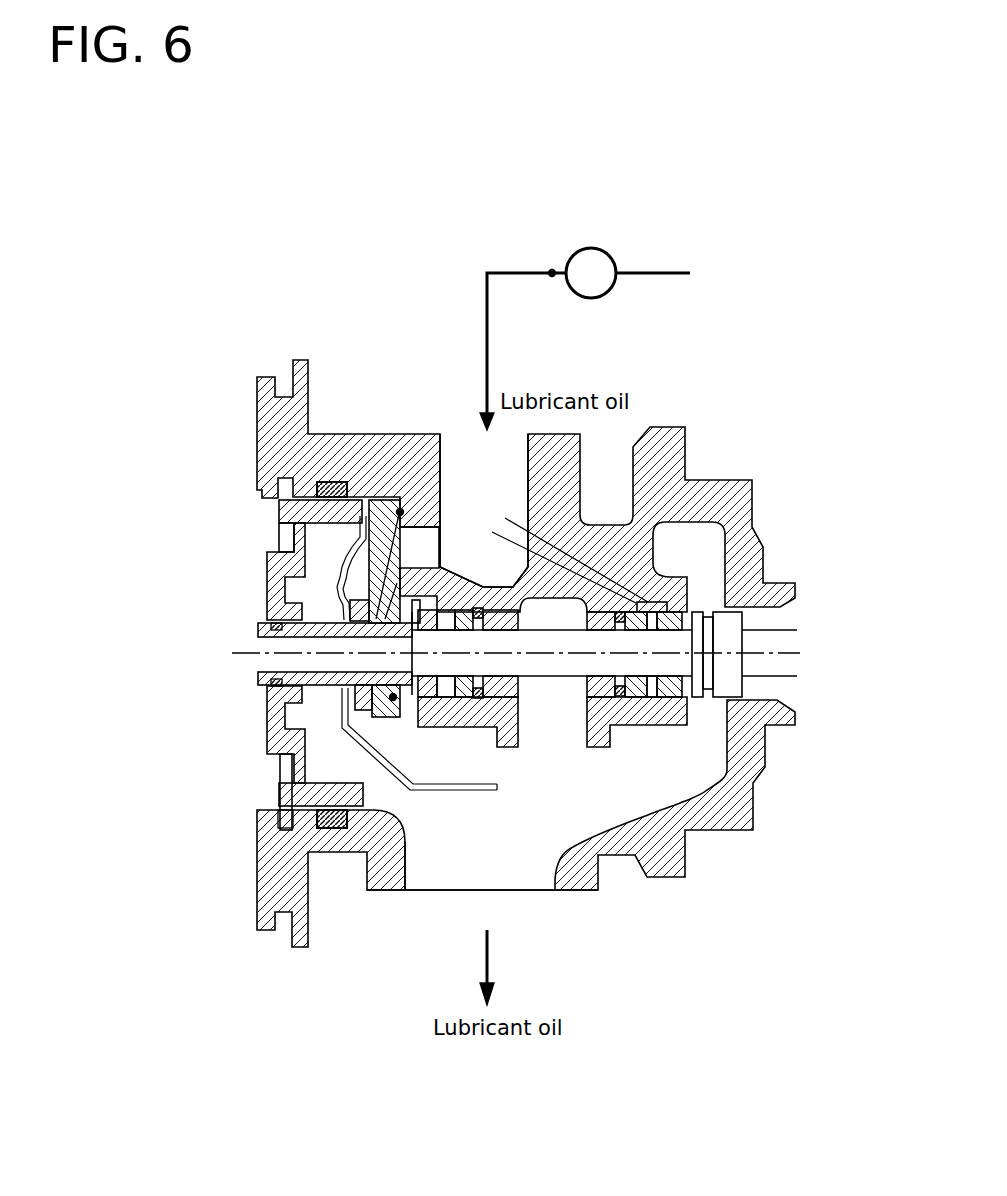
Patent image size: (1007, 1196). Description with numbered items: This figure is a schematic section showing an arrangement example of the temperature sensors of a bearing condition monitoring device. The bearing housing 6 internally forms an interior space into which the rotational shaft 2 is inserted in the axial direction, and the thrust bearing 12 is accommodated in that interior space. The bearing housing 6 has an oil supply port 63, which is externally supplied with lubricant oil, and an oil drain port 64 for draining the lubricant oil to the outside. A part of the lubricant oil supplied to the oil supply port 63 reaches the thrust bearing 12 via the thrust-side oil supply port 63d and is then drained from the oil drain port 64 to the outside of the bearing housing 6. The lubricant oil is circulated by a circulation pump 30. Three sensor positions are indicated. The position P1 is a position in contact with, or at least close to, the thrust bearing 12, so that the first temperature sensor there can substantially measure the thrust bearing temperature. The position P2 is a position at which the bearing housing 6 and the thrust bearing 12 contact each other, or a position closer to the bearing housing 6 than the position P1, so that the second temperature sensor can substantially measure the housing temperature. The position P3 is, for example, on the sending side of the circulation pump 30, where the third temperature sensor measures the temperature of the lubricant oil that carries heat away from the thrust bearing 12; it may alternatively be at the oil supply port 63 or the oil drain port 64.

The circulation pump 30 is at (612, 260).
The position P1 is at (400, 510).
The thrust-side oil supply port 63d is at (432, 540).
The thrust bearing 12 is at (366, 520).
The oil supply port 63 is at (502, 494).
The rotational shaft 2 is at (557, 645).
The position P3 is at (550, 280).
The position P2 is at (395, 700).
The oil drain port 64 is at (498, 873).
The bearing housing 6 is at (526, 695).